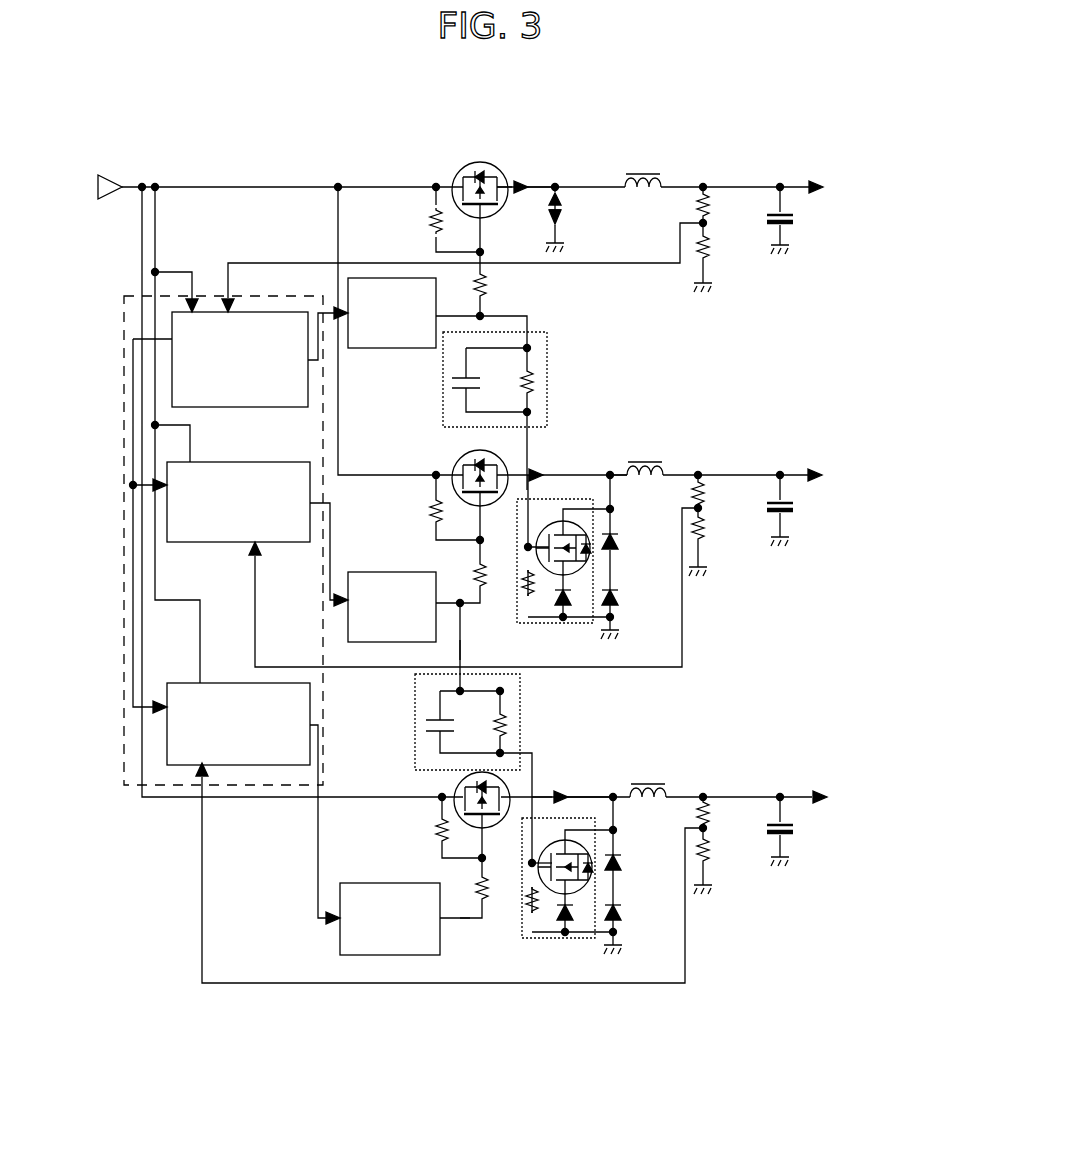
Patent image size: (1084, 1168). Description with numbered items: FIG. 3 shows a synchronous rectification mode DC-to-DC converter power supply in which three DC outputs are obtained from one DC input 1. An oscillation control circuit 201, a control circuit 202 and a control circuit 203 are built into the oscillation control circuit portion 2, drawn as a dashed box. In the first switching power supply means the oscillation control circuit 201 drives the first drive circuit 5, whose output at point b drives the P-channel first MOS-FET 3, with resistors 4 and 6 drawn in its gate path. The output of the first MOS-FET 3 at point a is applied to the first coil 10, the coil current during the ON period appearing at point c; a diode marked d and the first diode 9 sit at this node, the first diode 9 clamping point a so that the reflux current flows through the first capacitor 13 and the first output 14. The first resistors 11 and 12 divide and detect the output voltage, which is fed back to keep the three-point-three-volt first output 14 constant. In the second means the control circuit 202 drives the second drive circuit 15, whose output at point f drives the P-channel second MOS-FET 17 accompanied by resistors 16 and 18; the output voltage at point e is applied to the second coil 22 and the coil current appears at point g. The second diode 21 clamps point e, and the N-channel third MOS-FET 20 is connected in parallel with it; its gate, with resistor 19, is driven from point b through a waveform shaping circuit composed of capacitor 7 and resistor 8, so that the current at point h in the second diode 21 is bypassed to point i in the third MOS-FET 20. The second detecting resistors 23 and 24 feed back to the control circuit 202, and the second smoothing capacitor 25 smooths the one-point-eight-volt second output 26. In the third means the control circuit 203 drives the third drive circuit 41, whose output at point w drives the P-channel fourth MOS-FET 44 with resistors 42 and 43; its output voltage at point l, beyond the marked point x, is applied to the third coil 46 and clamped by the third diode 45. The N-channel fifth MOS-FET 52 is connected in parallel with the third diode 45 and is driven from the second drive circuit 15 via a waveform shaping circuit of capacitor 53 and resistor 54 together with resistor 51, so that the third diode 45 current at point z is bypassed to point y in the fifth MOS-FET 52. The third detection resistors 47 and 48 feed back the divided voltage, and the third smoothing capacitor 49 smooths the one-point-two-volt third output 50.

The DC input 1 is at (112, 174).
The oscillation control circuit portion 2 is at (124, 420).
The first MOS-FET 3 is at (458, 166).
The resistor 4 is at (424, 224).
The first drive circuit 5 is at (386, 350).
The resistor 6 is at (497, 283).
The capacitor 7 is at (455, 398).
The resistor 8 is at (542, 378).
The first diode 9 is at (578, 218).
The first coil 10 is at (620, 180).
The first resistor 11 is at (710, 207).
The first resistor 12 is at (713, 255).
The first capacitor 13 is at (797, 220).
The first output 14 is at (833, 163).
The second drive circuit 15 is at (374, 563).
The resistor 16 is at (422, 509).
The second MOS-FET 17 is at (455, 466).
The resistor 18 is at (468, 575).
The resistor 19 is at (520, 592).
The third MOS-FET 20 is at (562, 580).
The second diode 21 is at (622, 555).
The second coil 22 is at (650, 456).
The second detecting resistor 23 is at (712, 495).
The second detecting resistor 24 is at (710, 533).
The second smoothing capacitor 25 is at (803, 510).
The second output 26 is at (814, 463).
The third drive circuit 41 is at (340, 938).
The resistor 42 is at (472, 888).
The resistor 43 is at (423, 830).
The fourth MOS-FET 44 is at (457, 787).
The third diode 45 is at (623, 872).
The third coil 46 is at (652, 777).
The third detection resistor 47 is at (715, 815).
The third detection resistor 48 is at (713, 852).
The third smoothing capacitor 49 is at (803, 830).
The third output 50 is at (803, 783).
The resistor 51 is at (525, 902).
The fifth MOS-FET 52 is at (565, 897).
The capacitor 53 is at (425, 716).
The resistor 54 is at (512, 718).
The oscillation control circuit 201 is at (240, 359).
The control circuit 202 is at (238, 502).
The control circuit 203 is at (238, 724).
The point a is at (592, 186).
The point b is at (530, 321).
The point c is at (527, 179).
The diode d is at (567, 203).
The point e is at (620, 468).
The point f is at (452, 607).
The point g is at (535, 473).
The point h is at (615, 602).
The point i is at (580, 605).
The point l is at (608, 788).
The point w is at (462, 925).
The node x is at (563, 788).
The point y is at (582, 923).
The point z is at (618, 923).